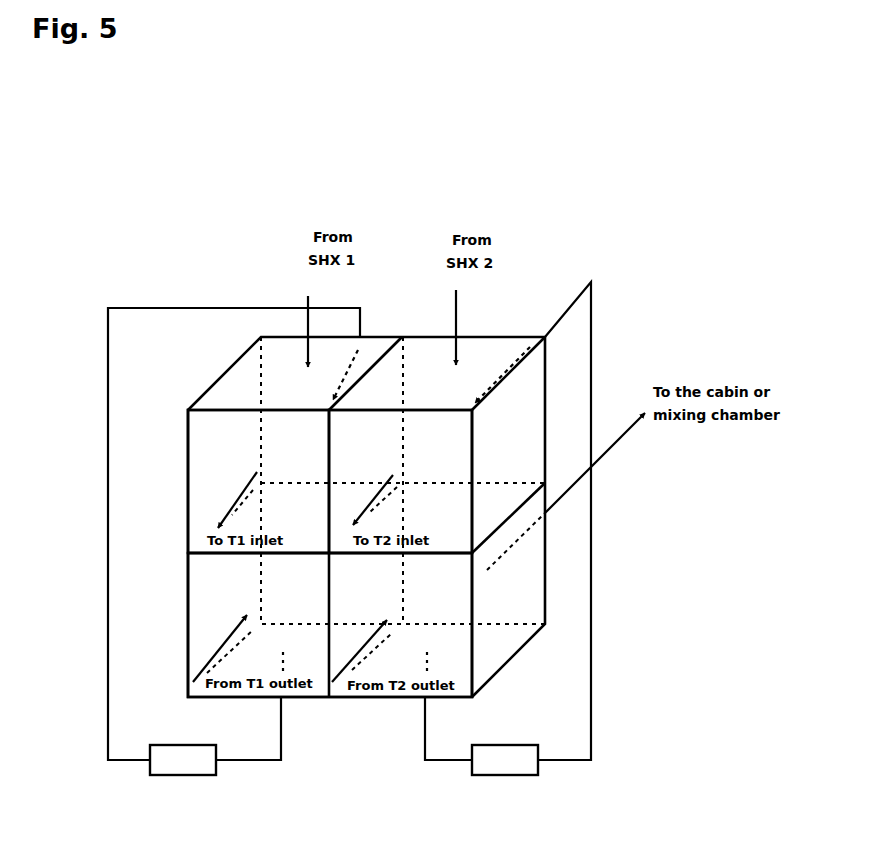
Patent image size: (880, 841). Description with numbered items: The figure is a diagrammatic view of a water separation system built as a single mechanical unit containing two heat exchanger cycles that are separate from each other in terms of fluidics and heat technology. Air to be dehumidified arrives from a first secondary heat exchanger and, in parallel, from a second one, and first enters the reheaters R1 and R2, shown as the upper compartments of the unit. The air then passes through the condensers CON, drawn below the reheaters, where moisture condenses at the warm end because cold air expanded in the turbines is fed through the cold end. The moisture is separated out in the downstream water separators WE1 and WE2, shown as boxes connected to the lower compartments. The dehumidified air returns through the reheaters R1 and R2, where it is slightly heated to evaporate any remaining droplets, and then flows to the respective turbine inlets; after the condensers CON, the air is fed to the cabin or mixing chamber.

The reheater R1 is at (295, 445).
The reheater R2 is at (400, 481).
The condenser CON is at (330, 625).
The water separator WE1 is at (183, 760).
The water separator WE2 is at (505, 760).